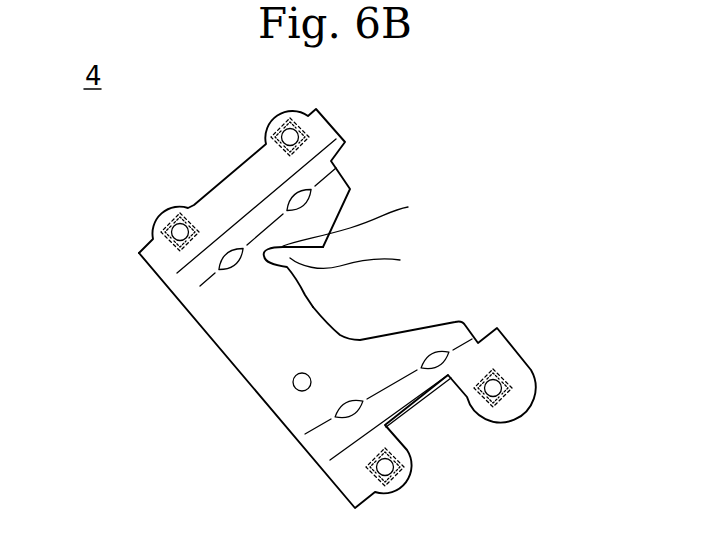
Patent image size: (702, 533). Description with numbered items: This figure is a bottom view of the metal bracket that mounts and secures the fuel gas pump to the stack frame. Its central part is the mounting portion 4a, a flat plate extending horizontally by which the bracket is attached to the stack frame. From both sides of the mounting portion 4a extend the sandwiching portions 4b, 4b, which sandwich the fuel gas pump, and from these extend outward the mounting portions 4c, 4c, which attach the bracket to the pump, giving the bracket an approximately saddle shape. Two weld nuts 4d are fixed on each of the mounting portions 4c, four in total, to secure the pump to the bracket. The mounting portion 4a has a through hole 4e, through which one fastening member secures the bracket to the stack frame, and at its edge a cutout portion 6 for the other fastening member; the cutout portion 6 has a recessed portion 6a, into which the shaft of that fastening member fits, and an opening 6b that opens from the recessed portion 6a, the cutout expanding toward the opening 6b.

The mounting portion 4a is at (230, 327).
The sandwiching portions 4b is at (313, 182).
The mounting portions 4c is at (237, 183).
The weld nuts 4d is at (153, 237).
The through hole 4e is at (294, 381).
The cutout portion 6 is at (452, 188).
The recessed portion 6a is at (362, 219).
The opening 6b is at (366, 262).